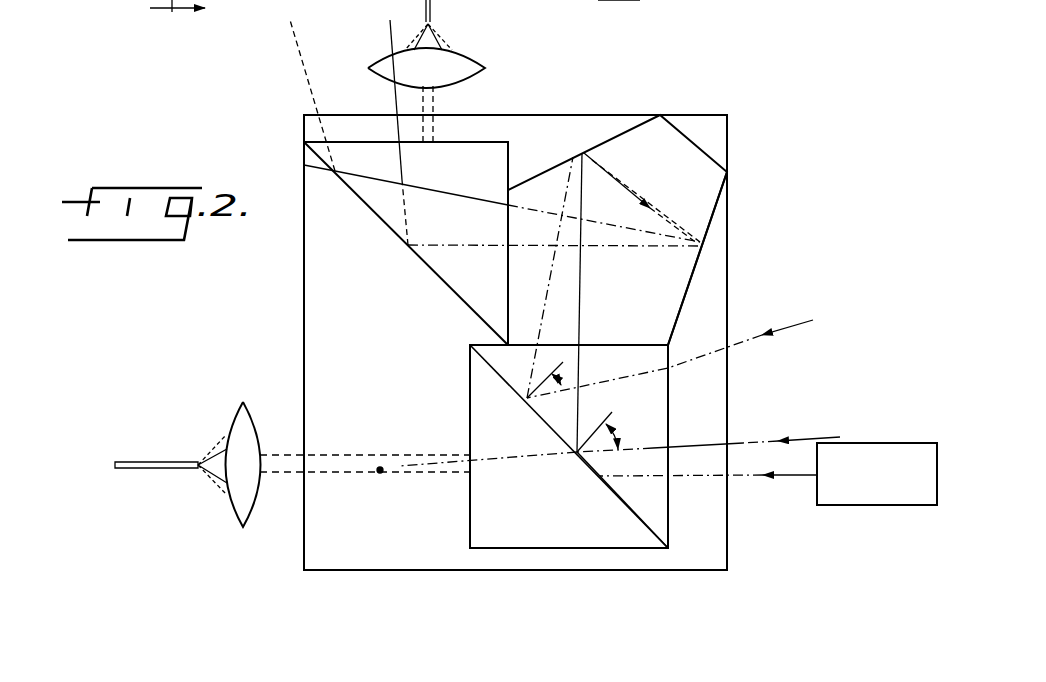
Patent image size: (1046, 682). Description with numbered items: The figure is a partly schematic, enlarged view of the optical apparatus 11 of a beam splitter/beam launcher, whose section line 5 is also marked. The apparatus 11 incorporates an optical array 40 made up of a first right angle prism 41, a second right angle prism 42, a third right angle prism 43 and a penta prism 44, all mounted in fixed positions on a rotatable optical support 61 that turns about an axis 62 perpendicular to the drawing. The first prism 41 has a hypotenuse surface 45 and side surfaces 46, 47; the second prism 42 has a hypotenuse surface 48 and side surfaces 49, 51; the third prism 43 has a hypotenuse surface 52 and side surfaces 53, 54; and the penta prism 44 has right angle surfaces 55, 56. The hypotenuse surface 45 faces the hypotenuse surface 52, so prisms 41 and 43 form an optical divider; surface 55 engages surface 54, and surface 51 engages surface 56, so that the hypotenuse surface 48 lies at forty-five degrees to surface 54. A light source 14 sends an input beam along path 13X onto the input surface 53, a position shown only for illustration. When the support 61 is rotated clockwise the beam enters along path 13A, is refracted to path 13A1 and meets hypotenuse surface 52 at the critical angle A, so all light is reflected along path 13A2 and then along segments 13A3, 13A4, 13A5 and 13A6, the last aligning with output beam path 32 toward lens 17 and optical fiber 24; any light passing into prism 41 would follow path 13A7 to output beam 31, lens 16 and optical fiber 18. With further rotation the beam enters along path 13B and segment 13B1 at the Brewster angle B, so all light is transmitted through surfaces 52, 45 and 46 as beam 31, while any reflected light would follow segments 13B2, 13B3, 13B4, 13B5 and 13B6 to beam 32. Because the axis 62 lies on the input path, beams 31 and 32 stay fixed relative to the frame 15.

The section line 5 is at (162, 13).
The optical apparatus 11 is at (658, 98).
The input beam path 13A is at (818, 437).
The refracted path segment 13A1 is at (655, 446).
The reflected path segment 13A2 is at (581, 313).
The path segment 13A3 is at (590, 167).
The path segment 13A4 is at (450, 248).
The path segment 13A5 is at (398, 226).
The path segment 13A6 is at (389, 30).
The continuation path 13A7 is at (493, 465).
The input beam path 13B is at (803, 320).
The path segment 13B1 is at (645, 390).
The path segment 13B2 is at (551, 283).
The path segment 13B3 is at (700, 240).
The path segment 13B4 is at (496, 205).
The path segment 13B5 is at (325, 152).
The path segment 13B6 is at (292, 58).
The input light beam path 13X is at (808, 483).
The light source 14 is at (907, 507).
The frame 15 is at (619, 8).
The lens 16 is at (238, 508).
The lens 17 is at (470, 63).
The optical fiber 18 is at (162, 470).
The optical fiber 24 is at (437, 17).
The output beam 31 is at (302, 473).
The output beam path 32 is at (437, 100).
The optical array 40 is at (360, 318).
The first right angle prism 41 is at (478, 522).
The second right angle prism 42 is at (487, 140).
The third right angle prism 43 is at (674, 404).
The penta prism 44 is at (712, 190).
The hypotenuse surface 45 is at (615, 486).
The first side surface 46 is at (474, 398).
The second side surface 47 is at (655, 548).
The hypotenuse surface 48 is at (425, 262).
The first side surface 49 is at (368, 142).
The second side surface 51 is at (511, 163).
The hypotenuse surface 52 is at (642, 512).
The first side surface 53 is at (675, 490).
The second side surface 54 is at (477, 345).
The first right angle surface 55 is at (668, 343).
The second right angle surface 56 is at (509, 200).
The rotatable optical support 61 is at (729, 136).
The axis 62 is at (380, 472).
The angle A is at (614, 432).
The angle B is at (574, 374).